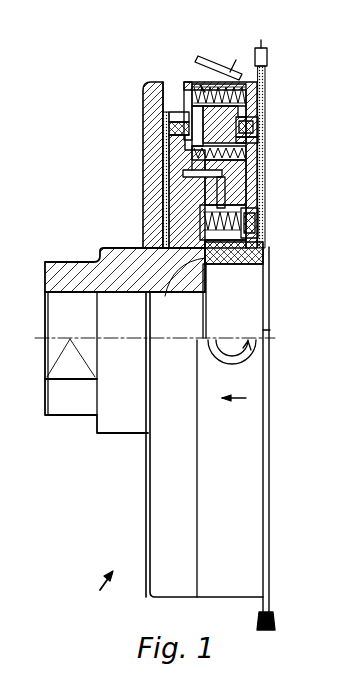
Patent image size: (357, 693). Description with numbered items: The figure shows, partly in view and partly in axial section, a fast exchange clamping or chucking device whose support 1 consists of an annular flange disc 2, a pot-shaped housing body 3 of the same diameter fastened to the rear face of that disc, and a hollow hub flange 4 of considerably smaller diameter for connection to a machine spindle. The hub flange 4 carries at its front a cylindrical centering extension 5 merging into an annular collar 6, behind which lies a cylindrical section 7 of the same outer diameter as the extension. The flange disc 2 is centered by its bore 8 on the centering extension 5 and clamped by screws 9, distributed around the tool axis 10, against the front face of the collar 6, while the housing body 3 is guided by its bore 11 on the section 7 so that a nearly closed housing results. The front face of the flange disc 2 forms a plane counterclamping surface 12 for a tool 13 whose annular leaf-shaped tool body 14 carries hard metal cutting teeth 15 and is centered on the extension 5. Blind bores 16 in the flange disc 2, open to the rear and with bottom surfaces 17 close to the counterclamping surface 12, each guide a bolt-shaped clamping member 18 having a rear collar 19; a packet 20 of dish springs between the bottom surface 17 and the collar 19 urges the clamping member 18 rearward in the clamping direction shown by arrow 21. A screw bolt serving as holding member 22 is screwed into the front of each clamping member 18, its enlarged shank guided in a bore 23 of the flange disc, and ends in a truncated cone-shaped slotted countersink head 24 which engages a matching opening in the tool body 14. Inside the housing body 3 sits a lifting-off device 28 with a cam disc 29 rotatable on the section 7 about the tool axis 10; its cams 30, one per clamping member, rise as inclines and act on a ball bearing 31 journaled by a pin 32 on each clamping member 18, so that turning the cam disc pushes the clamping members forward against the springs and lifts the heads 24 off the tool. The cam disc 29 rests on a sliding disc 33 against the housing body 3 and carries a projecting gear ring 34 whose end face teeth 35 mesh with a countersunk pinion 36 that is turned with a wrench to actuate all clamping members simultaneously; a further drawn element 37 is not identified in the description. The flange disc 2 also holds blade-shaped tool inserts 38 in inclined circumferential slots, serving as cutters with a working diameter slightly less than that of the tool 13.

The support 1 is at (101, 593).
The annular flange disc 2 is at (270, 518).
The housing body 3 is at (158, 495).
The hub flange 4 is at (93, 424).
The cylindrical centering extension 5 is at (259, 256).
The annular collar 6 is at (244, 258).
The cylindrical section 7 is at (115, 246).
The bore 8 is at (260, 264).
The screws 9 is at (258, 234).
The tool axis 10 is at (273, 337).
The bore 11 is at (179, 288).
The counterclamping surface 12 is at (262, 182).
The tool 13 is at (280, 62).
The tool body 14 is at (262, 205).
The cutting teeth 15 is at (260, 40).
The blind bores 16 is at (246, 112).
The bottom surfaces 17 is at (258, 160).
The clamping member 18 is at (200, 85).
The collar 19 is at (183, 87).
The packet of dish springs 20 is at (232, 56).
The arrow 21 is at (234, 409).
The holding member 22 is at (262, 134).
The bore 23 is at (258, 141).
The countersink head 24 is at (254, 126).
The lifting-off device 28 is at (172, 108).
The cam disc 29 is at (165, 168).
The cams 30 is at (172, 142).
The ball bearing 31 is at (165, 130).
The pin 32 is at (165, 112).
The sliding disc 33 is at (200, 180).
The gear ring 34 is at (185, 205).
The teeth 35 is at (225, 258).
The pinion 36 is at (225, 355).
The arrow ring 37 is at (247, 358).
The tool inserts 38 is at (209, 58).